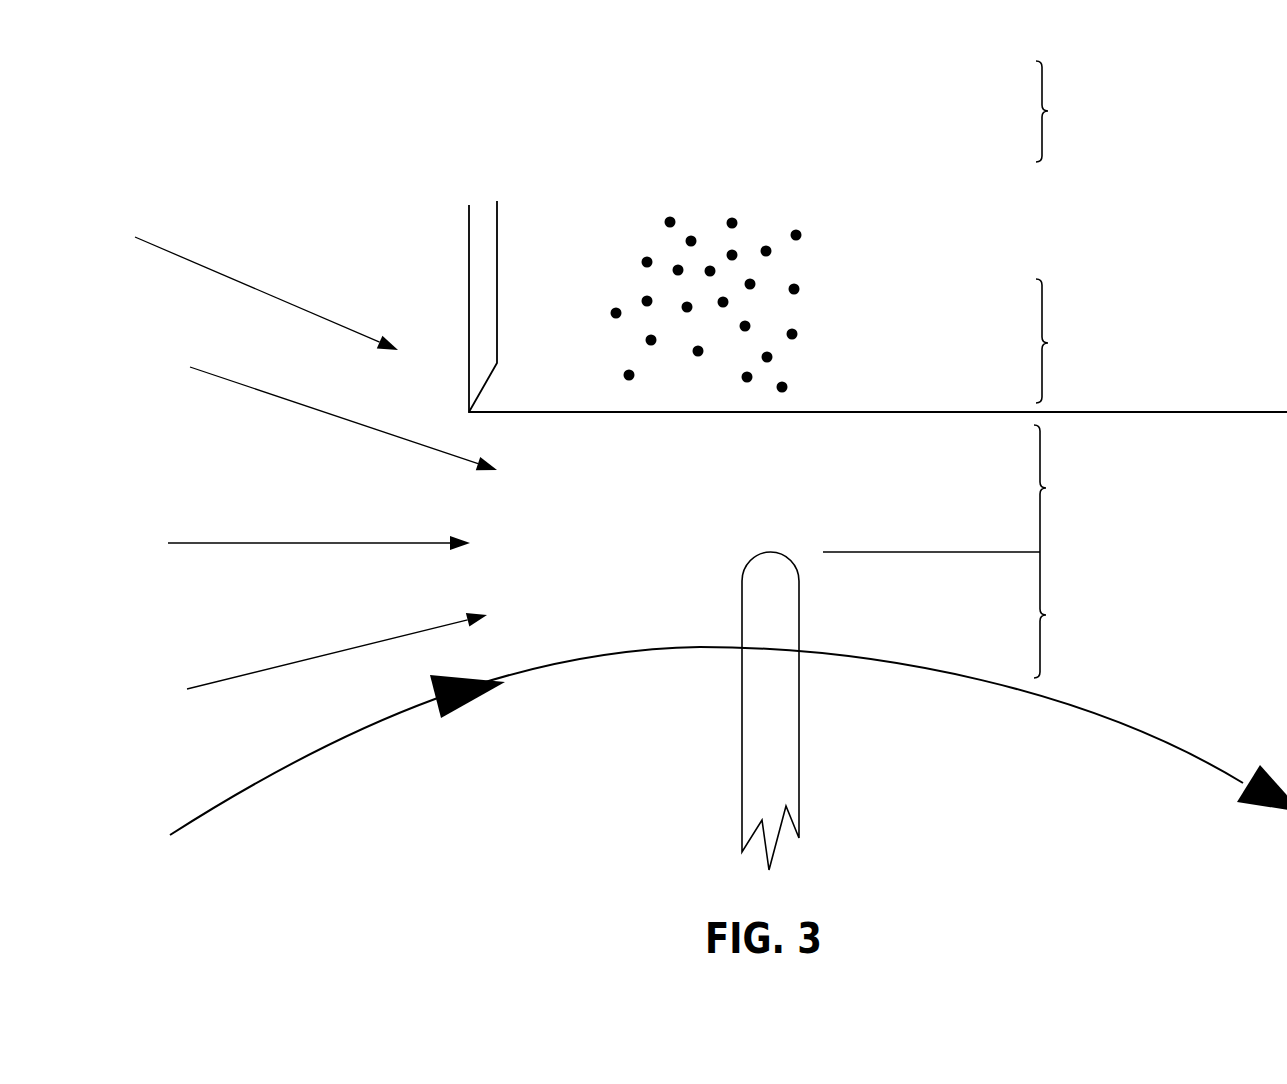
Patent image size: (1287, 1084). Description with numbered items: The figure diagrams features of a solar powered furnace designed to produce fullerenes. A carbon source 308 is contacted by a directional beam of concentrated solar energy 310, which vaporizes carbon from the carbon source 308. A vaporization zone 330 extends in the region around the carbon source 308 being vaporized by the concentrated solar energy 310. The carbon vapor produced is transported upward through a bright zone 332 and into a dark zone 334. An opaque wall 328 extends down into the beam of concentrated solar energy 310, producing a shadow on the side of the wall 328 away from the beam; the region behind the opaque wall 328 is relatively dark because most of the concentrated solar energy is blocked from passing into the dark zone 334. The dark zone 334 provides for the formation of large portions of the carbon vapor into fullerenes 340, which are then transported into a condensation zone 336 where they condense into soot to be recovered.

The carbon source 308 is at (799, 748).
The concentrated solar energy 310 is at (298, 544).
The opaque wall 328 is at (469, 245).
The vaporization zone 330 is at (1046, 615).
The bright zone 332 is at (1046, 488).
The dark zone 334 is at (1048, 343).
The condensation zone 336 is at (1048, 111).
The fullerenes 340 is at (796, 235).